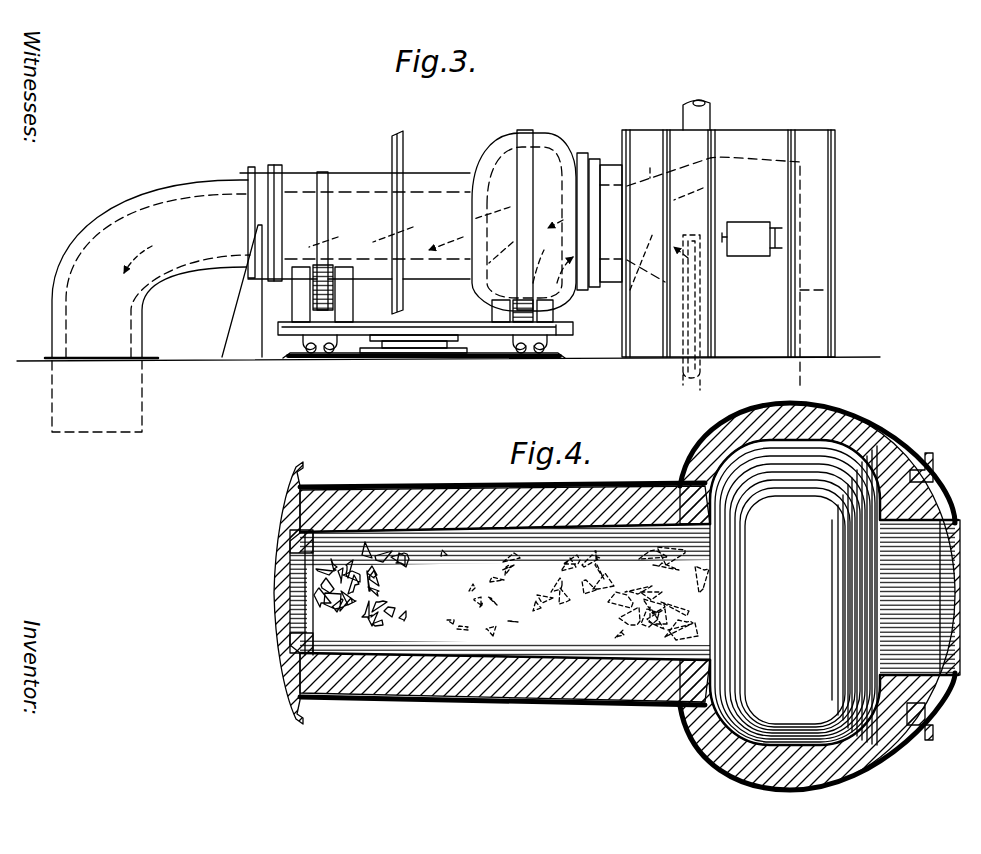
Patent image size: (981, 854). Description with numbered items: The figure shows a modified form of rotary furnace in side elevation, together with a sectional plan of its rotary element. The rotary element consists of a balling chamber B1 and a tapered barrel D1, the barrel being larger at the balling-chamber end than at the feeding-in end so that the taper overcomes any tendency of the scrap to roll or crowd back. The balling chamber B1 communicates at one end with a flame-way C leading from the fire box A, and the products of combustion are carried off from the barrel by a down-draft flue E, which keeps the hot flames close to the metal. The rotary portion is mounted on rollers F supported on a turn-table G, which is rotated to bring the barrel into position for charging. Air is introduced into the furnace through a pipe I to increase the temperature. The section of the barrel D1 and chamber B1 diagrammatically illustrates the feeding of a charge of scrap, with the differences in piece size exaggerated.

In FIG. 3, the flue E is at (176, 208).
In FIG. 3, the barrel D1 is at (430, 176).
In FIG. 4, the barrel D1 is at (452, 486).
In FIG. 3, the balling chamber B1 is at (551, 139).
In FIG. 4, the balling chamber B1 is at (862, 440).
In FIG. 3, the flame-way C is at (611, 297).
In FIG. 3, the fire box A is at (752, 138).
In FIG. 3, the rollers F is at (332, 297).
In FIG. 3, the turn-table G is at (412, 328).
In FIG. 3, the pipe I is at (683, 376).